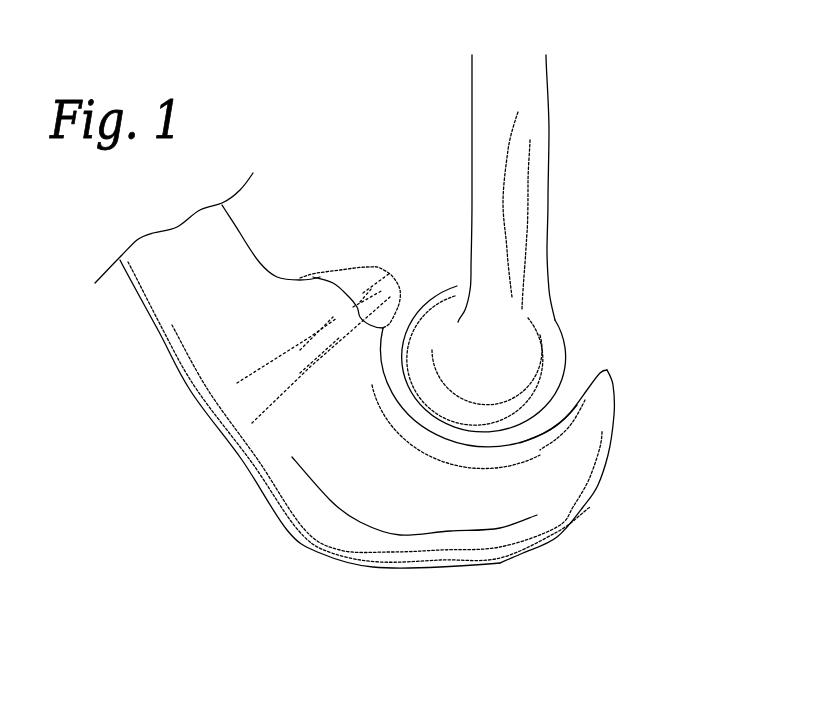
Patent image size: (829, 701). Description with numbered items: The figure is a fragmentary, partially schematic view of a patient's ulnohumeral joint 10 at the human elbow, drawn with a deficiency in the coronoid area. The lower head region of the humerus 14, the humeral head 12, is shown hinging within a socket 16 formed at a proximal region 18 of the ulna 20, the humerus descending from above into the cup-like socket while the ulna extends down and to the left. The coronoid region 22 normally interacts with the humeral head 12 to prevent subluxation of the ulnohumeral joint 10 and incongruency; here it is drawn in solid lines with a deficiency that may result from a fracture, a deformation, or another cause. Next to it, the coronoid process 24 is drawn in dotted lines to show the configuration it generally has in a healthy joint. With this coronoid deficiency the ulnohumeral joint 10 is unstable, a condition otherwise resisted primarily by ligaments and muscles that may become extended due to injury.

The ulnohumeral joint 10 is at (615, 522).
The humeral head 12 is at (522, 358).
The humerus 14 is at (523, 158).
The socket 16 is at (413, 410).
The proximal region of the ulna 18 is at (453, 527).
The ulna 20 is at (238, 382).
The coronoid region 22 is at (332, 262).
The coronoid process 24 is at (385, 258).